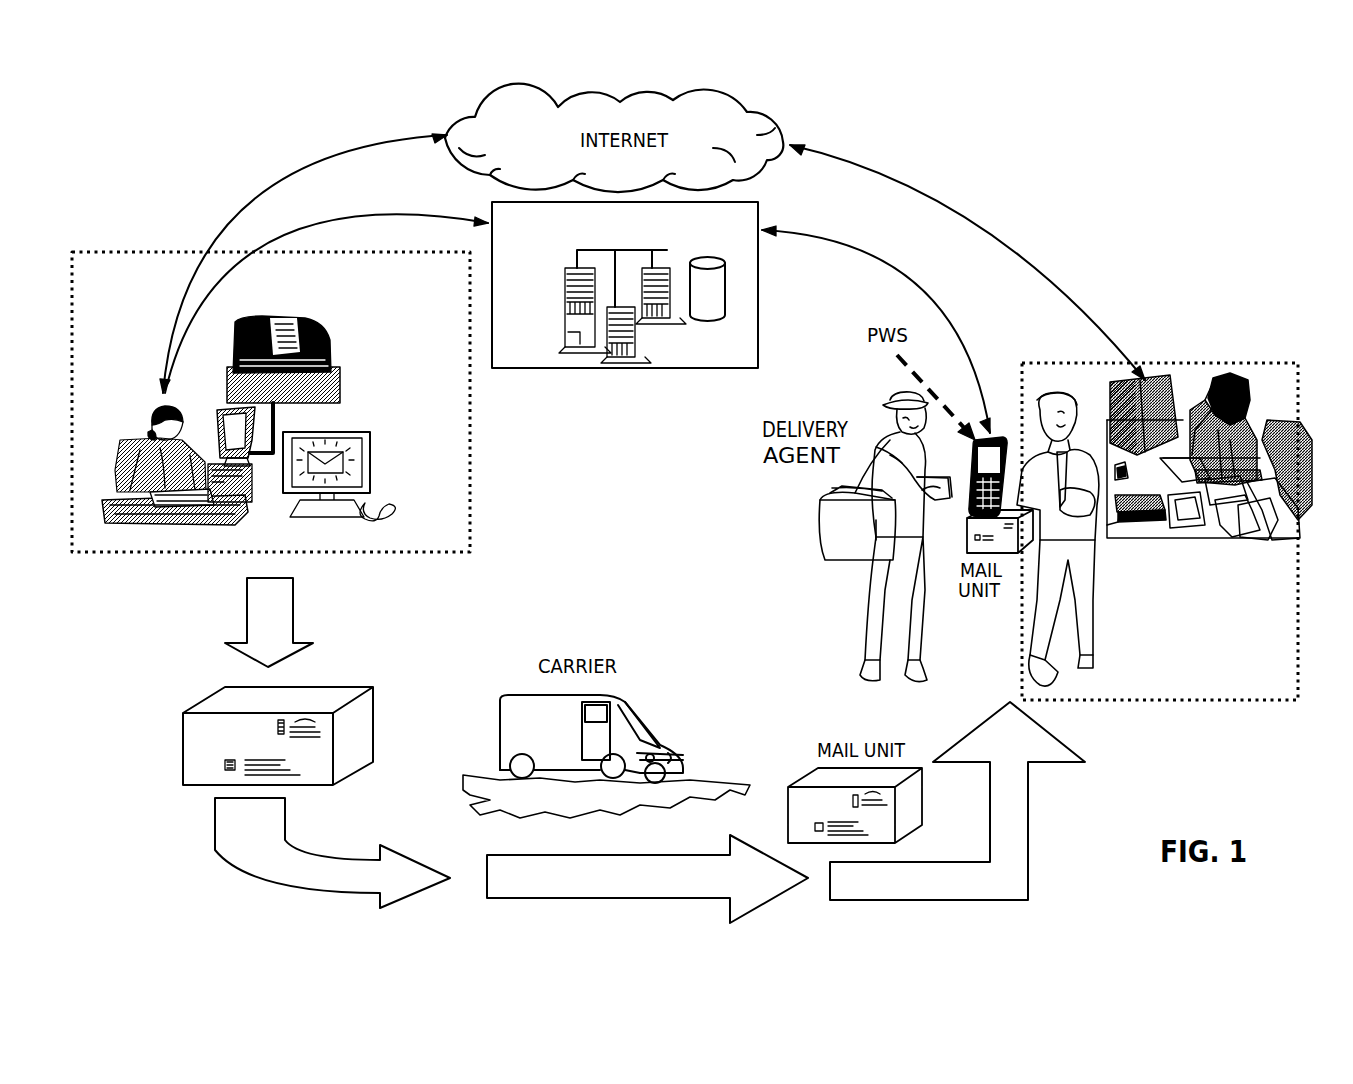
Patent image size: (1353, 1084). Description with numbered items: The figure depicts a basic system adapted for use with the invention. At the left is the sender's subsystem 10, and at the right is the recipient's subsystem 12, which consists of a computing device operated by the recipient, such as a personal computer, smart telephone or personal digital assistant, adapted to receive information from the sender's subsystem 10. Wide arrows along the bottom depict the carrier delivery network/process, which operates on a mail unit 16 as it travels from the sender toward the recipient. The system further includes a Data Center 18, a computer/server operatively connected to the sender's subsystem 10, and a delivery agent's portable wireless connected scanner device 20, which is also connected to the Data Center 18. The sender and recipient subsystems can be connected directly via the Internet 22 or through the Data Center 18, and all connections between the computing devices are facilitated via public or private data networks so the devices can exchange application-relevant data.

The sender's subsystem 10 is at (153, 243).
The recipient's subsystem 12 is at (1178, 340).
The mail unit 16 is at (313, 692).
The Data Center 18 is at (603, 397).
The portable wireless connected scanner device (PWS) 20 is at (1005, 440).
The Internet 22 is at (448, 104).